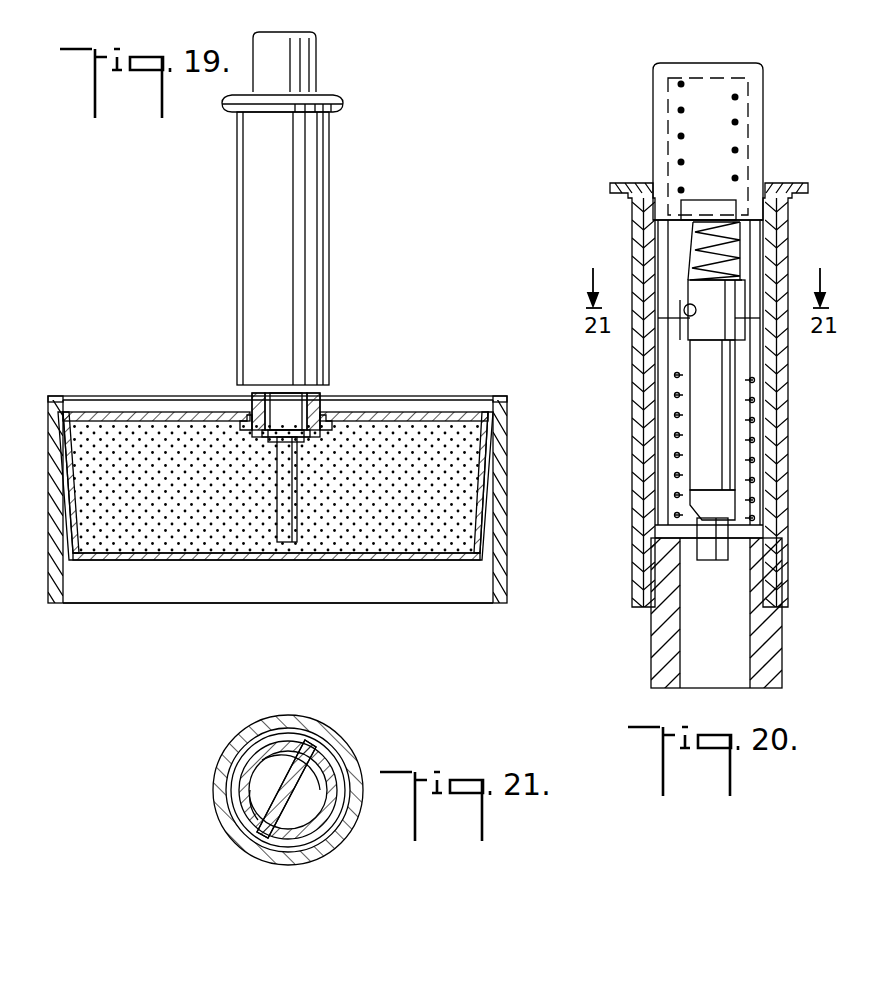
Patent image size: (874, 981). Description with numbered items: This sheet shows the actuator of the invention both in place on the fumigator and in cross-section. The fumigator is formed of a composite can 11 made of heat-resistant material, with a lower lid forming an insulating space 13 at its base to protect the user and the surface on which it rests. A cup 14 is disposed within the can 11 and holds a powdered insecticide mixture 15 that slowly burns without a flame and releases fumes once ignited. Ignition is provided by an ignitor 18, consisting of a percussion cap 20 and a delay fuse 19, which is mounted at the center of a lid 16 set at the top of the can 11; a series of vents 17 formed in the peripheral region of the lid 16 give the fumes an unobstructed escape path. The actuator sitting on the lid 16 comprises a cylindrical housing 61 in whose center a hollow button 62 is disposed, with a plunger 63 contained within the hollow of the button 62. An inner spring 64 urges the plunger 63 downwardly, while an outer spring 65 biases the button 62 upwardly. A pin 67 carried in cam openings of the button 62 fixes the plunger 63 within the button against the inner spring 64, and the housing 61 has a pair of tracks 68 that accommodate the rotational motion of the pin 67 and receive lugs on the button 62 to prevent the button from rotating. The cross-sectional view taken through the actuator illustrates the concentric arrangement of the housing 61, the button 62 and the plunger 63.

In FIG. 19, the composite can 11 is at (508, 478).
In FIG. 19, the space 13 is at (458, 597).
In FIG. 19, the cup 14 is at (460, 545).
In FIG. 19, the powdered insecticide mixture 15 is at (462, 552).
In FIG. 19, the lid 16 is at (505, 400).
In FIG. 19, the vents 17 is at (456, 416).
In FIG. 19, the ignitor 18 is at (397, 342).
In FIG. 19, the delay fuse 19 is at (295, 460).
In FIG. 19, the percussion cap 20 is at (300, 410).
In FIG. 19, the cylindrical housing 61 is at (329, 202).
In FIG. 20, the cylindrical housing 61 is at (788, 419).
In FIG. 21, the cylindrical housing 61 is at (310, 740).
In FIG. 19, the hollow button 62 is at (319, 50).
In FIG. 20, the hollow button 62 is at (757, 128).
In FIG. 21, the hollow button 62 is at (233, 737).
In FIG. 19, the plunger 63 is at (252, 398).
In FIG. 20, the plunger 63 is at (728, 550).
In FIG. 21, the plunger 63 is at (252, 777).
In FIG. 20, the inner spring 64 is at (727, 245).
In FIG. 20, the outer spring 65 is at (752, 450).
In FIG. 20, the pin 67 is at (680, 322).
In FIG. 21, the pin 67 is at (320, 857).
In FIG. 21, the tracks 68 is at (242, 842).